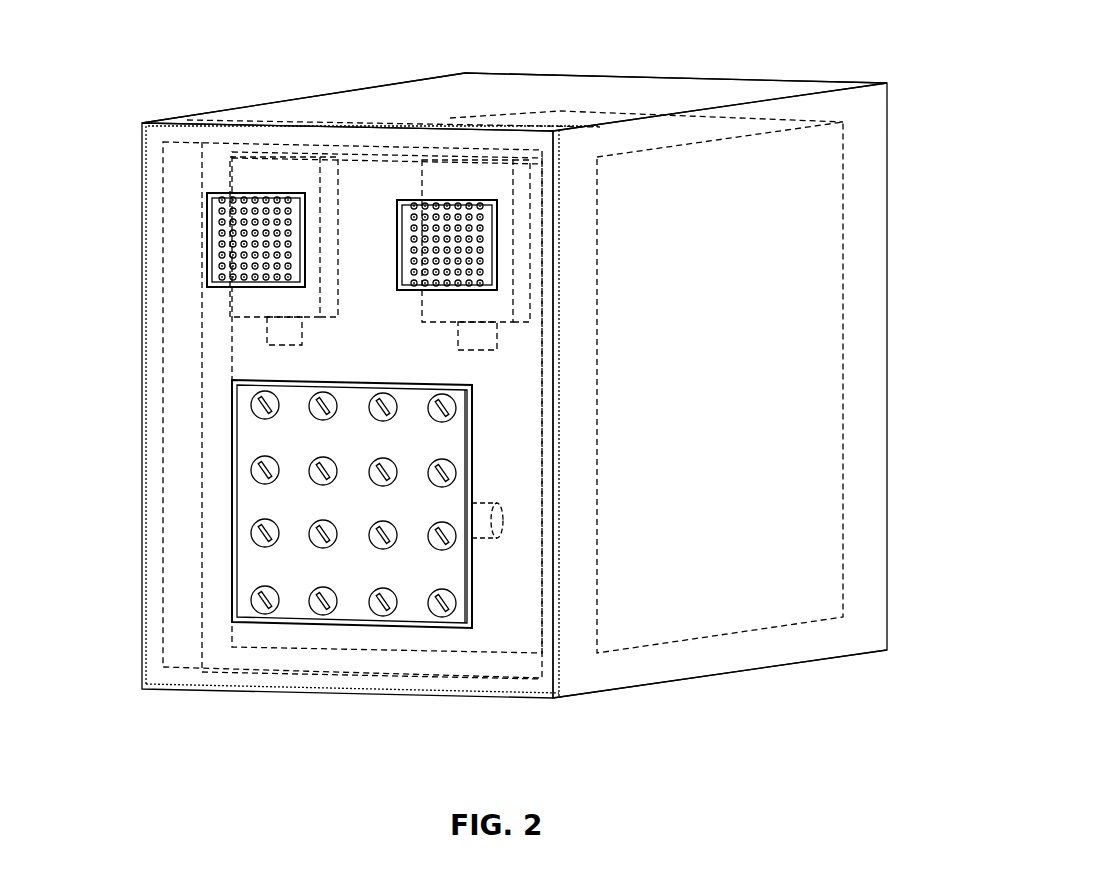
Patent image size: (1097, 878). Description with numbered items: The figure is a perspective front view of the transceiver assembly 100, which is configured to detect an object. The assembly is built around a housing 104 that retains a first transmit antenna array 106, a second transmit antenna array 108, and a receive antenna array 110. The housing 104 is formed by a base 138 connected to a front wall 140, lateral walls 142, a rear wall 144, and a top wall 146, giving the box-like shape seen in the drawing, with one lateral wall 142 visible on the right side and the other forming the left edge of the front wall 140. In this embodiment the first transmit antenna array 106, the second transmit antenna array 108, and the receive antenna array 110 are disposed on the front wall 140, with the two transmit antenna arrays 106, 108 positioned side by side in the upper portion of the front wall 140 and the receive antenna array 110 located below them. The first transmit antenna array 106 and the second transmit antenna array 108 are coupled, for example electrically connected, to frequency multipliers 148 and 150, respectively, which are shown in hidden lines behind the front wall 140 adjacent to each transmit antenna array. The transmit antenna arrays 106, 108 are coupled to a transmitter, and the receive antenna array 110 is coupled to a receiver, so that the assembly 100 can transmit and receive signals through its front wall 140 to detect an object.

The transceiver assembly 100 is at (146, 82).
The housing 104 is at (876, 131).
The first transmit antenna array 106 is at (207, 245).
The second transmit antenna array 108 is at (497, 243).
The receive antenna array 110 is at (465, 570).
The base 138 is at (603, 693).
The front wall 140 is at (322, 655).
The lateral walls 142 is at (803, 342).
The rear wall 144 is at (770, 78).
The top wall 146 is at (528, 92).
The frequency multiplier 148 is at (279, 172).
The frequency multiplier 150 is at (470, 177).